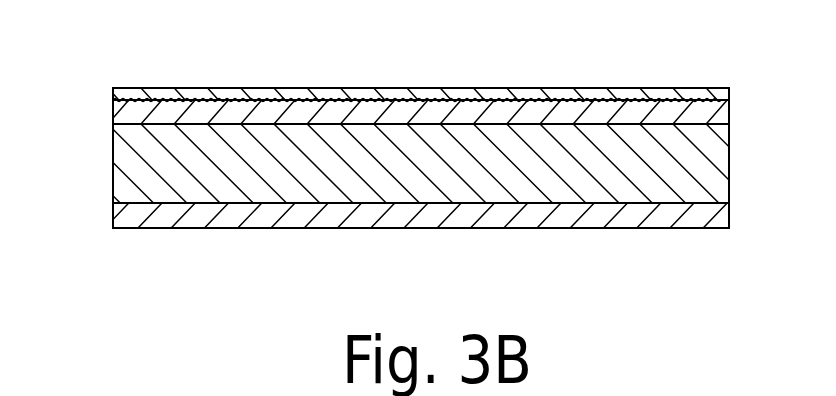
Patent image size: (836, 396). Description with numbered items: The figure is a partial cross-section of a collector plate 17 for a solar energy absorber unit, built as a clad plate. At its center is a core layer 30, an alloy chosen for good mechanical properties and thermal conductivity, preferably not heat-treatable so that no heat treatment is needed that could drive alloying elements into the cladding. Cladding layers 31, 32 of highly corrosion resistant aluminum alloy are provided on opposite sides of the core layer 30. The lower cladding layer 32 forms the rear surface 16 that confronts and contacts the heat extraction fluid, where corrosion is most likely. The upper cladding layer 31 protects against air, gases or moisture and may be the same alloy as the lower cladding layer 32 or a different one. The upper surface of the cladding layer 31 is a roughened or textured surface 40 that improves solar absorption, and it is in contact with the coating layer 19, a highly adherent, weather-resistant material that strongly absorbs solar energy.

The rear surface 16 is at (255, 229).
The collector plate 17 is at (737, 100).
The layer of solar-absorbing material 19 is at (125, 94).
The core layer 30 is at (128, 163).
The cladding layer 31 is at (117, 119).
The cladding layer 32 is at (120, 220).
The roughened or textured surface 40 is at (476, 100).